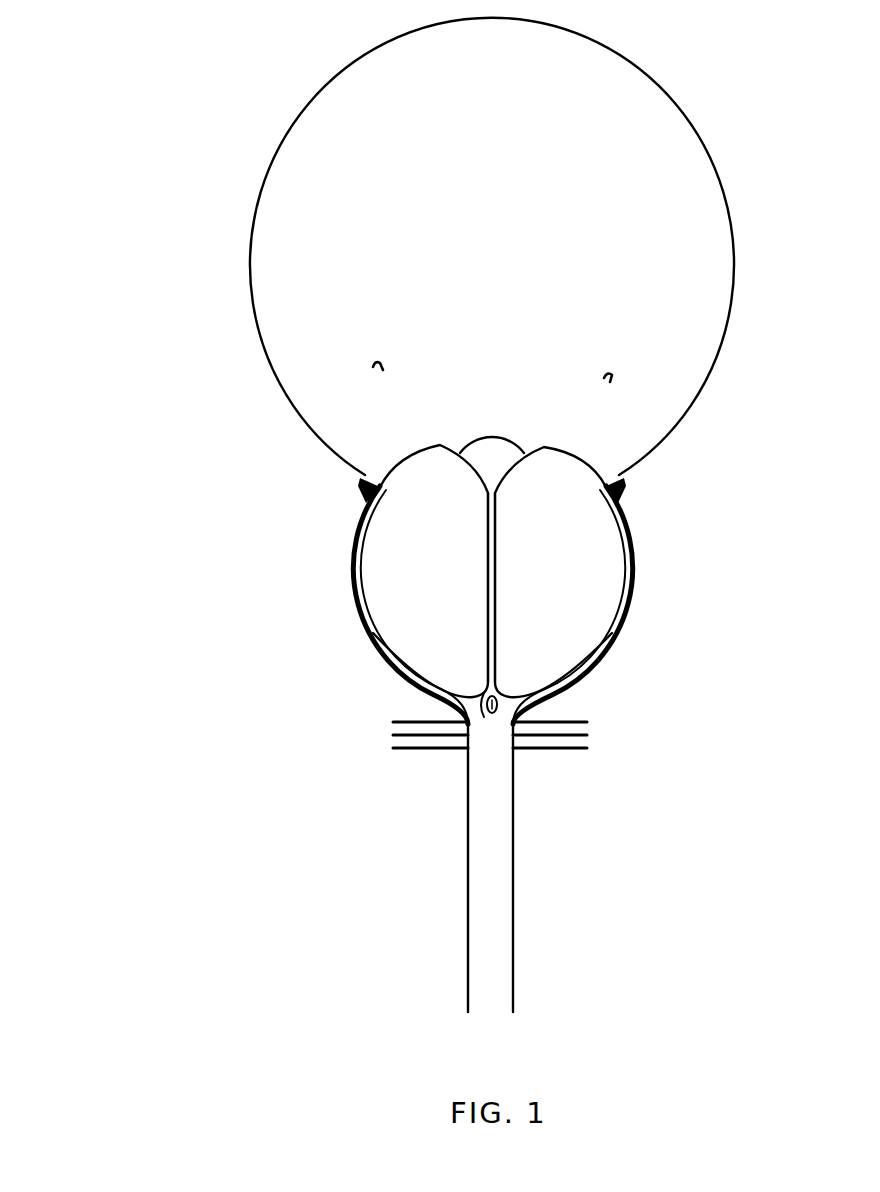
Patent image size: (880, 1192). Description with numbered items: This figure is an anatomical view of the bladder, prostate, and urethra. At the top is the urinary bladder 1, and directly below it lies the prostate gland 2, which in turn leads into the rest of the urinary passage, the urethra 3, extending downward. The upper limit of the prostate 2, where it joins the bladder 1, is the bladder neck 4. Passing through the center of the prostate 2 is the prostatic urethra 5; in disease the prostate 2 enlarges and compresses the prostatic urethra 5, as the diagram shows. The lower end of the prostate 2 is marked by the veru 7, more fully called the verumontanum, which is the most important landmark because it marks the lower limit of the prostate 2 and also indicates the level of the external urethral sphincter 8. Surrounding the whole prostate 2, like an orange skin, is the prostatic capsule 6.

The urinary bladder 1 is at (250, 257).
The prostate gland 2 is at (390, 613).
The urethra 3 is at (485, 848).
The bladder neck 4 is at (510, 443).
The prostatic urethra 5 is at (491, 555).
The prostatic capsule 6 is at (630, 583).
The veru 7 is at (500, 697).
The external urethral sphincter 8 is at (593, 733).